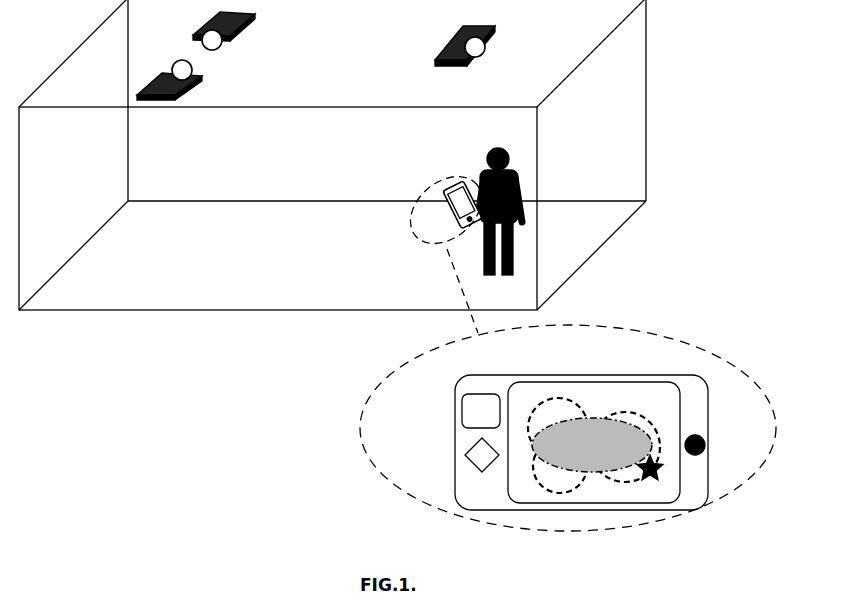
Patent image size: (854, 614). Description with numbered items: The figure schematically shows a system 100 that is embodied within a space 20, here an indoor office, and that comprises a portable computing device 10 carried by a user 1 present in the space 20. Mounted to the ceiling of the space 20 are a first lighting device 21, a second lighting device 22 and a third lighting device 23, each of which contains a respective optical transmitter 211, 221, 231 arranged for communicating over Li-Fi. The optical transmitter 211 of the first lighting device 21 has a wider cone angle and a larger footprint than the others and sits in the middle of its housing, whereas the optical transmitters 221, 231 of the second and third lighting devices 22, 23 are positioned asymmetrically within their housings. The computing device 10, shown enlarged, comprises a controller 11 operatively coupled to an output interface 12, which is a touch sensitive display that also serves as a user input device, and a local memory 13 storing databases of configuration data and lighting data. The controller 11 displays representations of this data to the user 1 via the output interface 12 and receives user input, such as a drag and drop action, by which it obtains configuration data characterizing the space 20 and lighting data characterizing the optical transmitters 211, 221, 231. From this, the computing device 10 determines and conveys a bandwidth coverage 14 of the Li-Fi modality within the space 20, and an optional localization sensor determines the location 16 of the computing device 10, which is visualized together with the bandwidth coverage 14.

The system 100 is at (192, 416).
The space 20 is at (138, 310).
The first lighting device 21 is at (463, 52).
The second lighting device 22 is at (257, 46).
The third lighting device 23 is at (140, 58).
The optical transmitter 211 is at (483, 54).
The optical transmitter 221 is at (221, 50).
The optical transmitter 231 is at (180, 60).
The user 1 is at (491, 150).
The computing device 10 is at (445, 186).
The controller 11 is at (462, 410).
The output interface 12 is at (508, 385).
The local memory 13 is at (465, 452).
The bandwidth coverage 14 is at (598, 400).
The location 16 is at (663, 467).